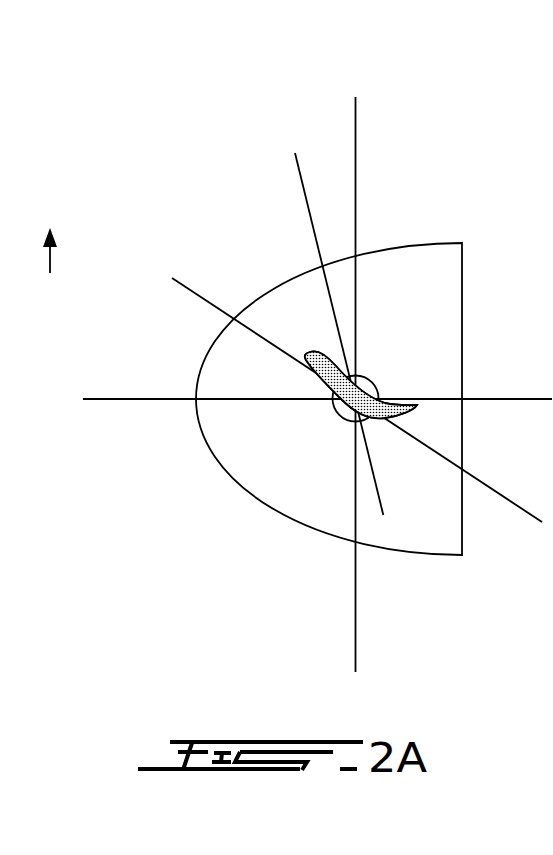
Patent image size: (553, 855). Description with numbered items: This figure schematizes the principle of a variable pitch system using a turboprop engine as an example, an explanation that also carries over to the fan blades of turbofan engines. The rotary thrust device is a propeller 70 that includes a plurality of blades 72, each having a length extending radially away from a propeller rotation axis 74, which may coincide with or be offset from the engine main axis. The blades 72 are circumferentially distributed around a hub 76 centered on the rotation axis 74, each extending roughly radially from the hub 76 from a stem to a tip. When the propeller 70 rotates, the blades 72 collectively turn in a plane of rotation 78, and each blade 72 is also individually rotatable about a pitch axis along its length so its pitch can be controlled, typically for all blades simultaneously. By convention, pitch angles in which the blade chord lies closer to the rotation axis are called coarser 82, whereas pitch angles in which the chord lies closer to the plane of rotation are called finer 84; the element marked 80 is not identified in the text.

The propeller 70 is at (292, 362).
The blade 72 is at (320, 385).
The propeller rotation axis 74 is at (113, 400).
The hub 76 is at (207, 447).
The plane of rotation 78 is at (356, 108).
The pitch change axis circle 80 is at (340, 417).
The coarser pitch angle 82 is at (185, 292).
The finer pitch angle 84 is at (305, 193).